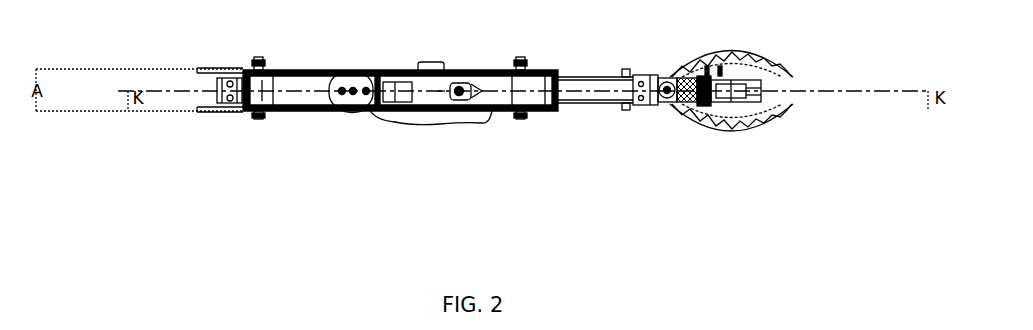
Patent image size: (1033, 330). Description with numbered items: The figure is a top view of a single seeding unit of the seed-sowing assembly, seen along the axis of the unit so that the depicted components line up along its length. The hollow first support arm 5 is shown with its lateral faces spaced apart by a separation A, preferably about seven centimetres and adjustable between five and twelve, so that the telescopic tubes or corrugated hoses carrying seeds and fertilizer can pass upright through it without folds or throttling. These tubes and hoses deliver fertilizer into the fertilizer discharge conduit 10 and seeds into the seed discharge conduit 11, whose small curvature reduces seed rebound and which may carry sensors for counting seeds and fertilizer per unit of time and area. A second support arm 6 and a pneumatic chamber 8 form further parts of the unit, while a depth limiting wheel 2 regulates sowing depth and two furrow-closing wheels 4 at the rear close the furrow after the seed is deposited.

The depth limiting wheel 2 is at (413, 122).
The furrow-closing wheels 4 is at (748, 70).
The first support arm 5 is at (313, 110).
The second support arm 6 is at (513, 110).
The pneumatic chamber 8 is at (357, 70).
The fertilizer discharge conduit 10 is at (377, 113).
The seed discharge conduit 11 is at (470, 100).